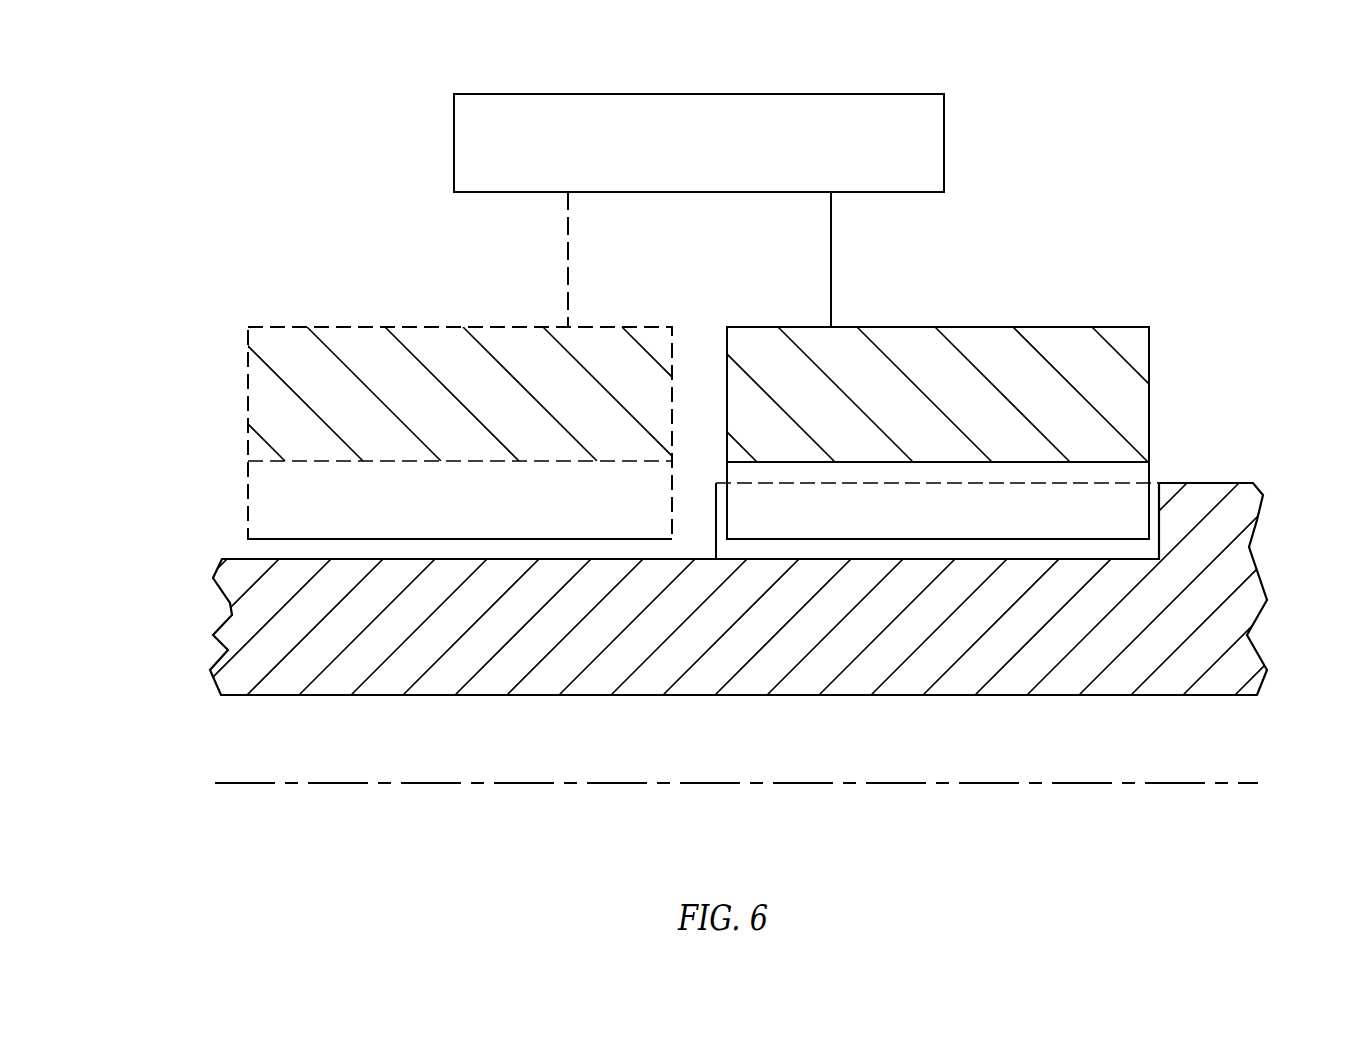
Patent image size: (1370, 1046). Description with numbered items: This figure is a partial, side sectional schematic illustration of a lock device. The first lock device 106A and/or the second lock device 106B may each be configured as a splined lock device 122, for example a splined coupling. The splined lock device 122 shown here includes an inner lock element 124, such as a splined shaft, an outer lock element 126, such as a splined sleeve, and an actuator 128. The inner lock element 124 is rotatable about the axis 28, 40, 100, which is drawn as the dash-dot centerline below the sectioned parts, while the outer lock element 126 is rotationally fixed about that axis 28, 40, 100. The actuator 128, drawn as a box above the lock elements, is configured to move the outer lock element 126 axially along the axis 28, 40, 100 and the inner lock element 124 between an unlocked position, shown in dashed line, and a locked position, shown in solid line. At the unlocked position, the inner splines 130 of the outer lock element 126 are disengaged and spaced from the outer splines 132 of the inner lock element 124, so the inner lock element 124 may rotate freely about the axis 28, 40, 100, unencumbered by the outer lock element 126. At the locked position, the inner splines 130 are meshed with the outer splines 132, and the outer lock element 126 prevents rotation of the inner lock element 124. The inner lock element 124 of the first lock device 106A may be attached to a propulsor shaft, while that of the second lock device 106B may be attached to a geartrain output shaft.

The actuator 128 is at (957, 153).
The outer lock element 126 is at (238, 418).
The inner lock element 124 is at (1269, 578).
The outer splines 132 is at (1038, 483).
The inner splines 130 is at (449, 540).
The first lock device 106A is at (1237, 101).
The second lock device 106B is at (1237, 101).
The splined lock device 122 is at (1223, 100).
The axis 28 is at (747, 832).
The axis 40 is at (747, 832).
The axis 100 is at (1242, 784).